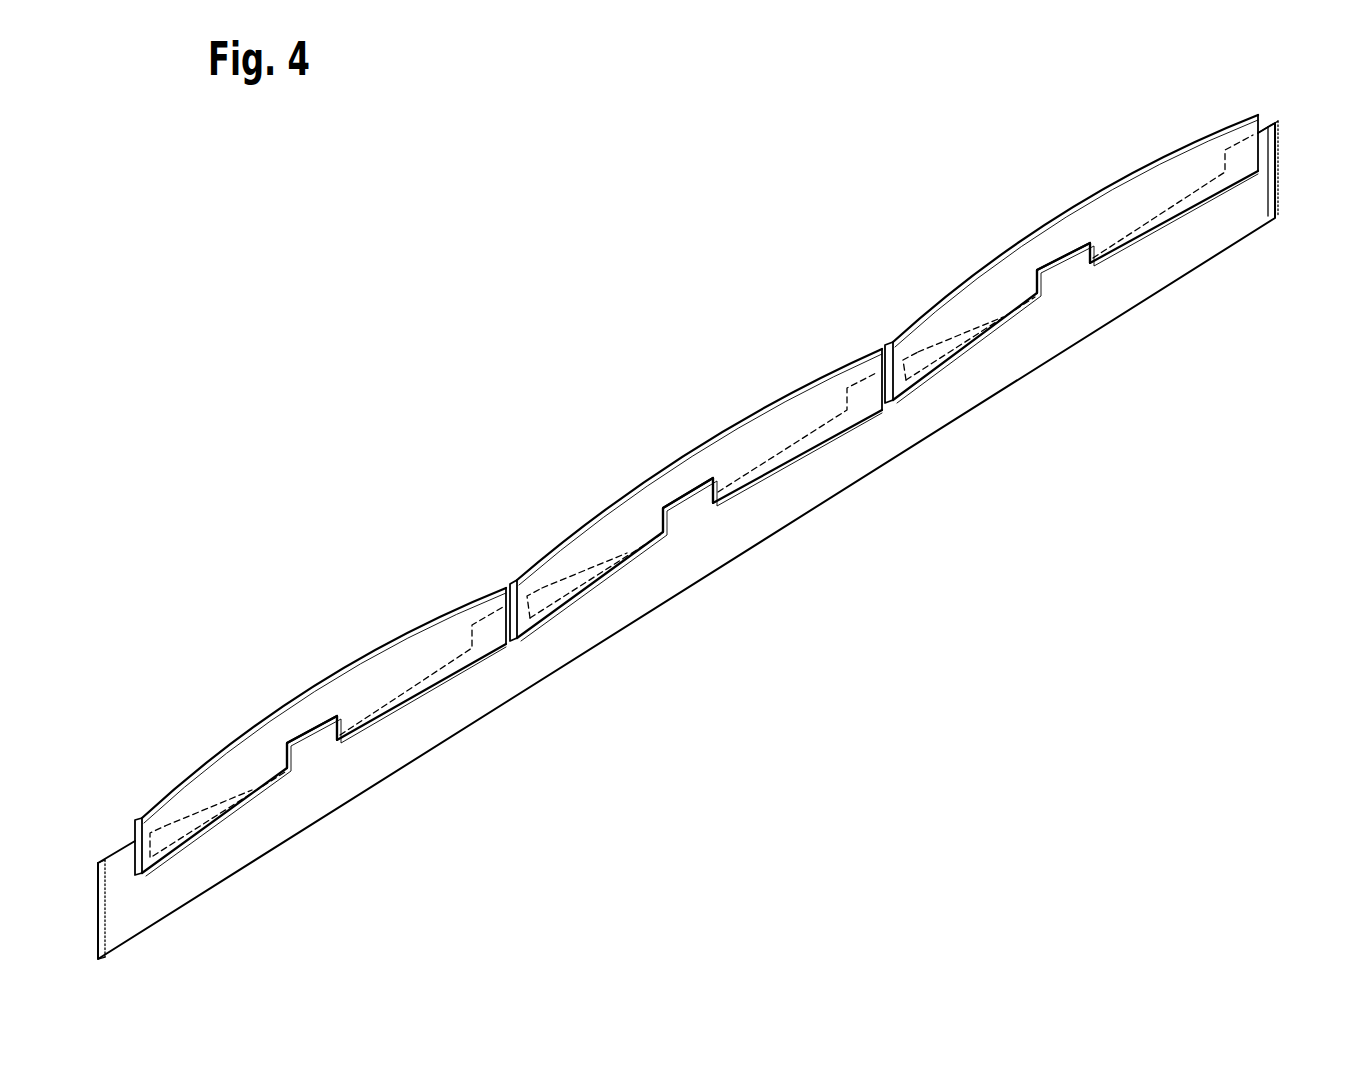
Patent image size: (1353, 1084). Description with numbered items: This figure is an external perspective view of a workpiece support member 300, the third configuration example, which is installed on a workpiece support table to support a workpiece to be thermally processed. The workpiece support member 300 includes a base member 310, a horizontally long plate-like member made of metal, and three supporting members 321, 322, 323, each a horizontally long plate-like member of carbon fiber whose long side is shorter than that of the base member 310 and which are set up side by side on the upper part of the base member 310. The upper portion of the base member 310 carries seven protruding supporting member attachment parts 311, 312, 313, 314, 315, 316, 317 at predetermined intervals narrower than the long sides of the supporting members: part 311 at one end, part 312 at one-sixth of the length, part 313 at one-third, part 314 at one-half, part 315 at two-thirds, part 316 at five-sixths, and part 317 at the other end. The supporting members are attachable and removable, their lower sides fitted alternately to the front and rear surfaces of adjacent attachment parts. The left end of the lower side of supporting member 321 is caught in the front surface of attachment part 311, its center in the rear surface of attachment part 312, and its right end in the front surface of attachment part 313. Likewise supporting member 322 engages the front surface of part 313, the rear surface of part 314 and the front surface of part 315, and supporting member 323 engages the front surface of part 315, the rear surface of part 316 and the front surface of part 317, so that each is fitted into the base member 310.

The workpiece support member 300 is at (602, 325).
The base member 310 is at (1210, 228).
The supporting member attachment part 311 is at (117, 845).
The supporting member attachment part 312 is at (321, 717).
The supporting member attachment part 313 is at (523, 600).
The supporting member attachment part 314 is at (695, 484).
The supporting member attachment part 315 is at (903, 362).
The supporting member attachment part 316 is at (1070, 247).
The supporting member attachment part 317 is at (1265, 123).
The supporting member 321 is at (337, 673).
The supporting member 322 is at (698, 443).
The supporting member 323 is at (1087, 197).